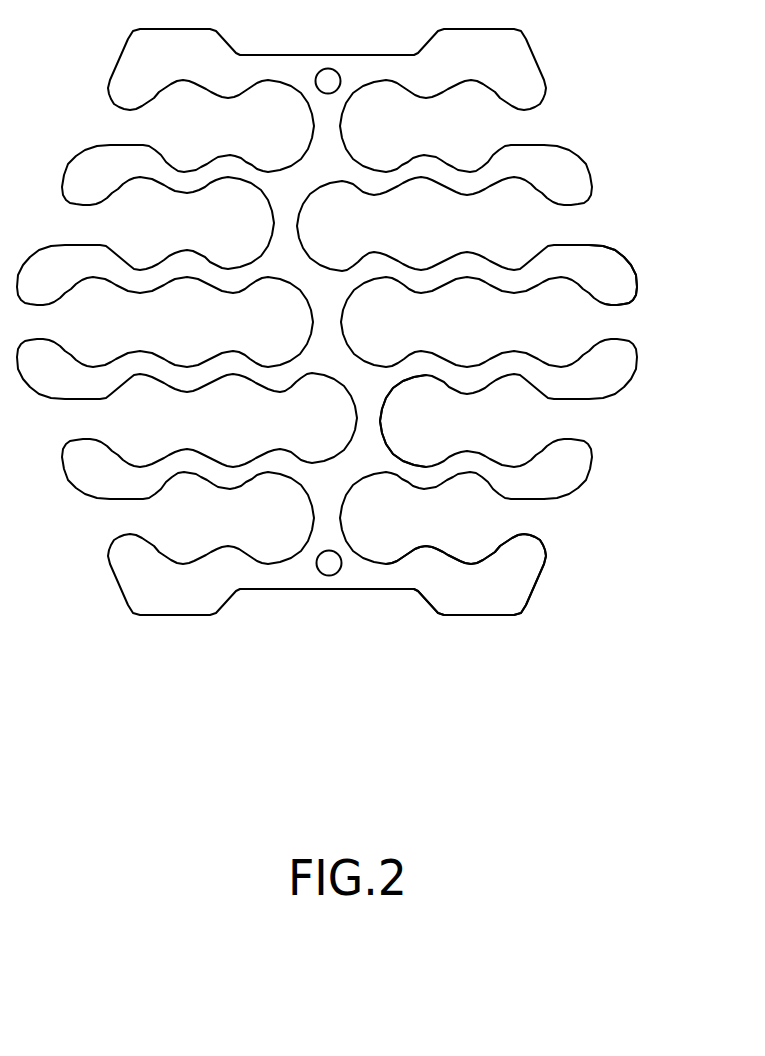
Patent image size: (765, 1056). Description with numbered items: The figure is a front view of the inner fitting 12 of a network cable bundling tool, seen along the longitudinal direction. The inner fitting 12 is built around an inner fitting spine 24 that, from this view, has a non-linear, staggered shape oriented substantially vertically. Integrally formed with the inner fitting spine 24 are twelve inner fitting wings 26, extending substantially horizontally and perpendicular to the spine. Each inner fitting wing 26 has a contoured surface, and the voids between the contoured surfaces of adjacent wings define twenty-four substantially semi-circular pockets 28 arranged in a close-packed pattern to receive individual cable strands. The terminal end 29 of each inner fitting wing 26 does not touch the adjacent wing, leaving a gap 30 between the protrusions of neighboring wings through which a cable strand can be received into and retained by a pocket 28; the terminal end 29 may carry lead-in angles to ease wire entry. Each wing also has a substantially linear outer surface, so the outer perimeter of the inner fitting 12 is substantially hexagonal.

The inner fitting 12 is at (235, 717).
The inner fitting spine 24 is at (326, 571).
The inner fitting wings 26 is at (477, 597).
The pockets 28 is at (548, 418).
The terminal end 29 is at (618, 270).
The gap 30 is at (568, 523).